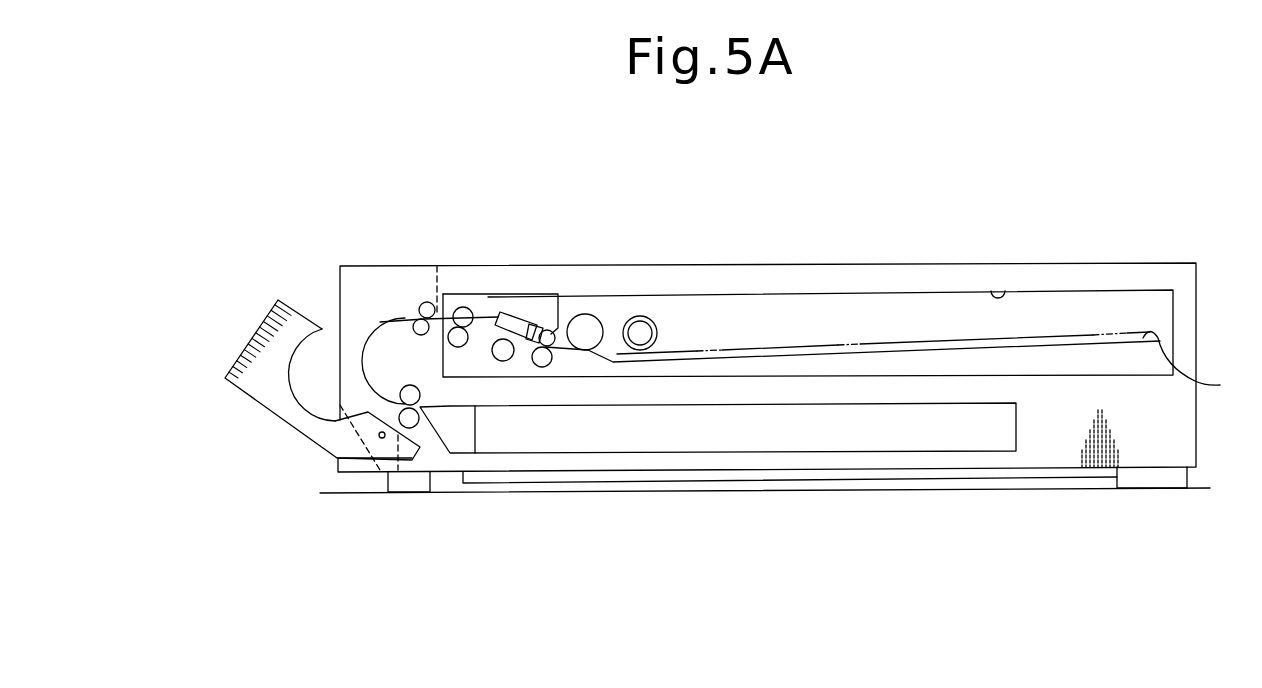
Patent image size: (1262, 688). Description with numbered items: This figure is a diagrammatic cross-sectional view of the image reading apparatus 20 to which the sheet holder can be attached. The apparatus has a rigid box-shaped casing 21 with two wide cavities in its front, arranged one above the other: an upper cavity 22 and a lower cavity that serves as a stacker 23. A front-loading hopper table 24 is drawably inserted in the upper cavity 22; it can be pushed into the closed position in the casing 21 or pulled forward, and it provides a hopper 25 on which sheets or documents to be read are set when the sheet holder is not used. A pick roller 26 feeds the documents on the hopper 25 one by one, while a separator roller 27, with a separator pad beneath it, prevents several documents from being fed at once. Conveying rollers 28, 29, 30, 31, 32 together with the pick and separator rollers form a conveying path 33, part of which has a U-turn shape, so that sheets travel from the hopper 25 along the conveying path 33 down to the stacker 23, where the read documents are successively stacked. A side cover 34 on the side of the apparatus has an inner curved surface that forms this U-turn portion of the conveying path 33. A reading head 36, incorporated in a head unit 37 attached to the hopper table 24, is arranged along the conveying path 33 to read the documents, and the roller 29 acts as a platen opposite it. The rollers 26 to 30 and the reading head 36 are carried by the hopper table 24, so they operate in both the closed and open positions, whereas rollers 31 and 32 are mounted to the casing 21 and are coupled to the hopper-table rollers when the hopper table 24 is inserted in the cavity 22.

The image reading apparatus 20 is at (856, 199).
The casing 21 is at (1167, 277).
The upper cavity 22 is at (1004, 291).
The stacker 23 is at (953, 440).
The hopper table 24 is at (903, 310).
The hopper 25 is at (1199, 367).
The pick roller 26 is at (650, 318).
The separator roller 27 is at (588, 320).
The conveying roller 28 is at (548, 362).
The conveying roller 29 is at (508, 358).
The conveying roller 30 is at (463, 346).
The conveying roller 31 is at (410, 315).
The conveying roller 32 is at (416, 427).
The conveying path 33 is at (380, 322).
The side cover 34 is at (250, 397).
The reading head 36 is at (530, 310).
The head unit 37 is at (473, 311).